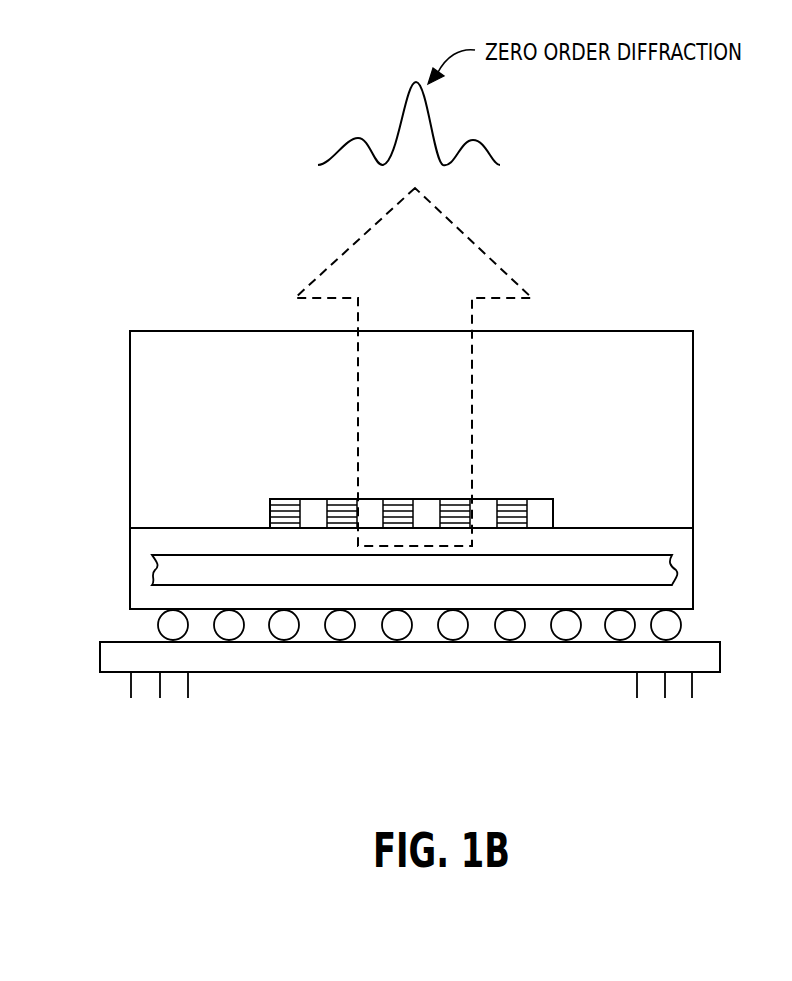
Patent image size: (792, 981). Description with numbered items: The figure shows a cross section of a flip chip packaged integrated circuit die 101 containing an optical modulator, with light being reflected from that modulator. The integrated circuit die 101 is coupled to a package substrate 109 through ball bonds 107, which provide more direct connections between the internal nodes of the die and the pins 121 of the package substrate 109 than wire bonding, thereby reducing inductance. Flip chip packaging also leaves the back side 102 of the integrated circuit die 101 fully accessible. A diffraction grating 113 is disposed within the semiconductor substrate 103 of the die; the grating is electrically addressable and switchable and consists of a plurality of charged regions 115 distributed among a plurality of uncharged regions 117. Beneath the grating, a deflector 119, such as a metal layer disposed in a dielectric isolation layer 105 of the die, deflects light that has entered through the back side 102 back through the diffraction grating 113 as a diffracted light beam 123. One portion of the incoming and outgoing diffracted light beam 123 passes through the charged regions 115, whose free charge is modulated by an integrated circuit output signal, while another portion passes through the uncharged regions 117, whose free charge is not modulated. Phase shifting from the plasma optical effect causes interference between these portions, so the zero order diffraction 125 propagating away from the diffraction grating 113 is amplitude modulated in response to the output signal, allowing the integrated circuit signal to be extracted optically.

The integrated circuit die 101 is at (692, 308).
The back side 102 is at (550, 326).
The semiconductor substrate 103 is at (680, 376).
The dielectric isolation layer 105 is at (687, 539).
The ball bonds 107 is at (567, 632).
The package substrate 109 is at (710, 656).
The diffraction grating 113 is at (545, 482).
The charged regions 115 is at (507, 488).
The uncharged regions 117 is at (310, 518).
The deflector 119 is at (593, 562).
The pins 121 is at (200, 706).
The diffracted light beam 123 is at (457, 262).
The zero order diffraction 125 is at (408, 90).